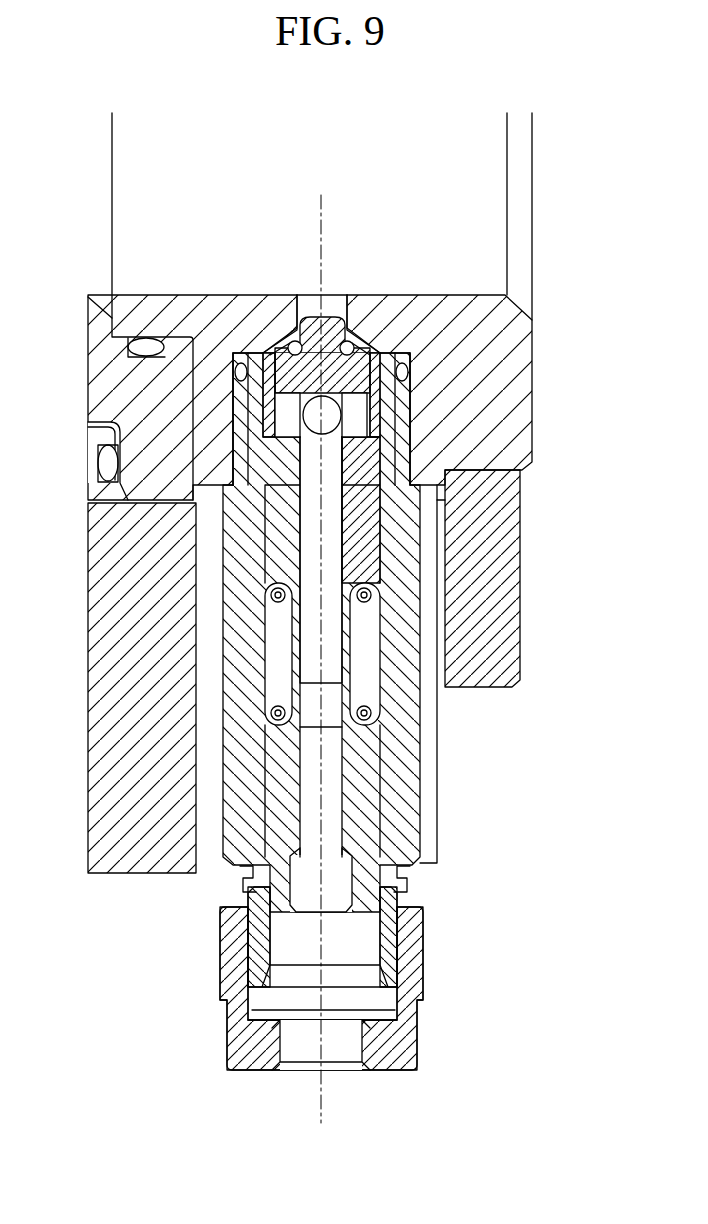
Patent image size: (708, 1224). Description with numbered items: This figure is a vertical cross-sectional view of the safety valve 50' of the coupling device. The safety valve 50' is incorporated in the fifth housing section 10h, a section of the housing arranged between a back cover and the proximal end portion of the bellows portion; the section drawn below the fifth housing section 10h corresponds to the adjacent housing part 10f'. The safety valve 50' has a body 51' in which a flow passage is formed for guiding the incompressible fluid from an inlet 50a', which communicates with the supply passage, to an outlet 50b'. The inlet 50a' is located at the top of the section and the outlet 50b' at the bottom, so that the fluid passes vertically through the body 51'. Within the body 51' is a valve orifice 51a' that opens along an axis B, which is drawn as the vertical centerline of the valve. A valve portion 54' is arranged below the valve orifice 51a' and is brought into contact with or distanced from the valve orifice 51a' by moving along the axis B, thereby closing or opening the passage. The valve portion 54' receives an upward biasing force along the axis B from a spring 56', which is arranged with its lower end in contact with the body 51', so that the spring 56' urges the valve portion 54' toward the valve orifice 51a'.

The fifth housing section 10h is at (505, 423).
The lower housing block 10f' is at (533, 578).
The safety valve 50' is at (339, 688).
The inlet 50a' is at (345, 255).
The outlet 50b' is at (332, 1091).
The body 51' is at (368, 632).
The valve orifice 51a' is at (443, 325).
The valve portion 54' is at (431, 614).
The spring 56' is at (204, 657).
The axis B is at (320, 1105).